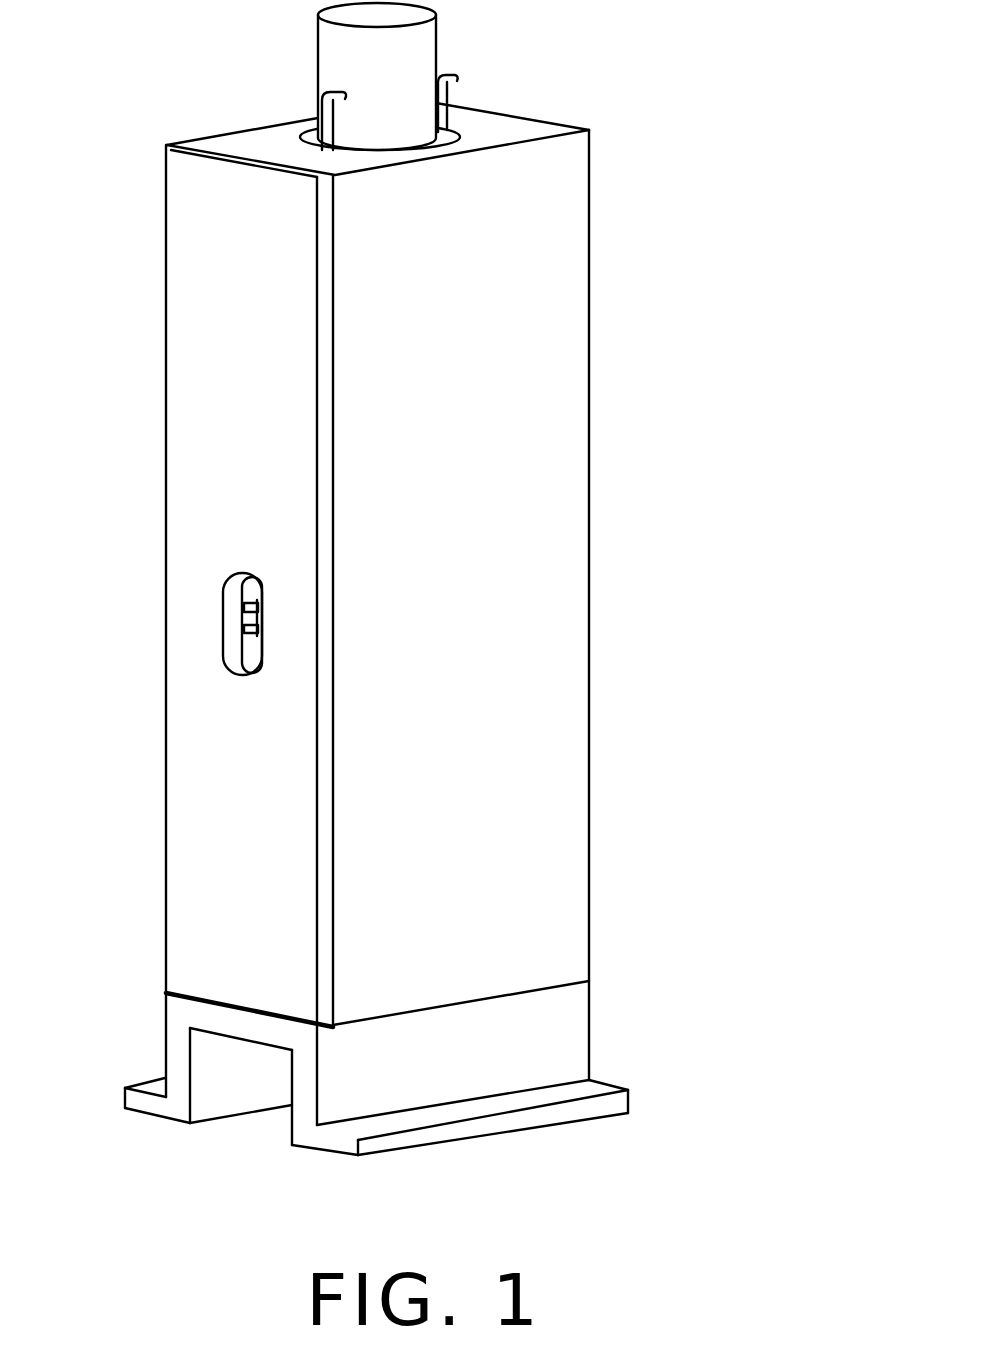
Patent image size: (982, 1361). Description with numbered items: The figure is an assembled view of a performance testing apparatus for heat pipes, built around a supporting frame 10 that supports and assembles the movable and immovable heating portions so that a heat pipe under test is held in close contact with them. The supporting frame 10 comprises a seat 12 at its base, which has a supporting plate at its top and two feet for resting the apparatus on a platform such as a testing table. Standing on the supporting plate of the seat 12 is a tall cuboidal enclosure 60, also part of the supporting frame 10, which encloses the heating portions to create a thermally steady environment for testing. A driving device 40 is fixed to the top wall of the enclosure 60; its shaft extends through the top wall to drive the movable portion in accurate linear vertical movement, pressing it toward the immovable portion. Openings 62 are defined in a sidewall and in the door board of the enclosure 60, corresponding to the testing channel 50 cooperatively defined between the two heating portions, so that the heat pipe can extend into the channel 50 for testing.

The supporting frame 10 is at (438, 579).
The seat 12 is at (547, 1047).
The driving device 40 is at (407, 68).
The testing channel 50 is at (257, 630).
The cuboidal enclosure 60 is at (558, 762).
The openings 62 is at (240, 665).